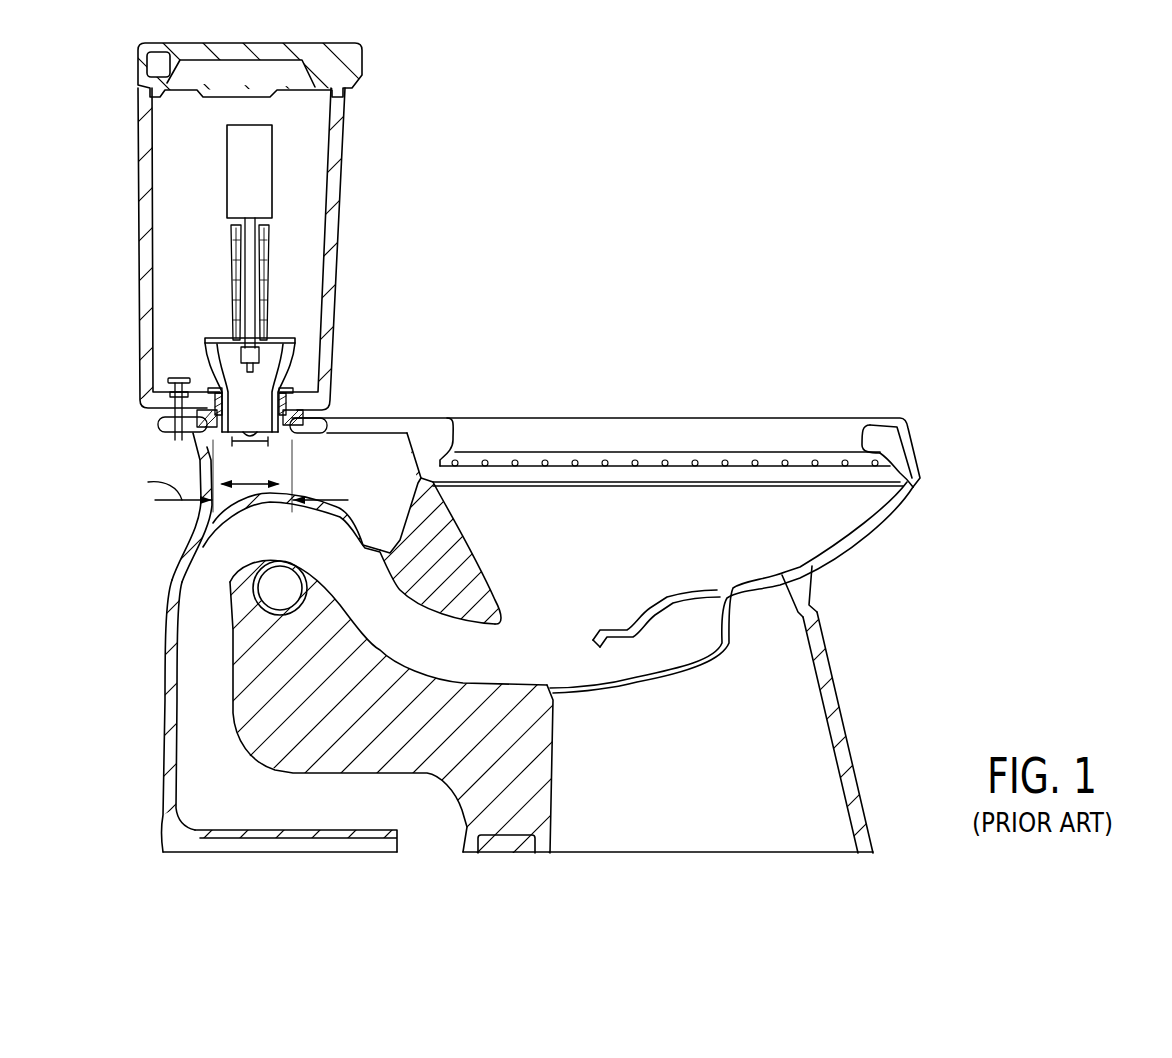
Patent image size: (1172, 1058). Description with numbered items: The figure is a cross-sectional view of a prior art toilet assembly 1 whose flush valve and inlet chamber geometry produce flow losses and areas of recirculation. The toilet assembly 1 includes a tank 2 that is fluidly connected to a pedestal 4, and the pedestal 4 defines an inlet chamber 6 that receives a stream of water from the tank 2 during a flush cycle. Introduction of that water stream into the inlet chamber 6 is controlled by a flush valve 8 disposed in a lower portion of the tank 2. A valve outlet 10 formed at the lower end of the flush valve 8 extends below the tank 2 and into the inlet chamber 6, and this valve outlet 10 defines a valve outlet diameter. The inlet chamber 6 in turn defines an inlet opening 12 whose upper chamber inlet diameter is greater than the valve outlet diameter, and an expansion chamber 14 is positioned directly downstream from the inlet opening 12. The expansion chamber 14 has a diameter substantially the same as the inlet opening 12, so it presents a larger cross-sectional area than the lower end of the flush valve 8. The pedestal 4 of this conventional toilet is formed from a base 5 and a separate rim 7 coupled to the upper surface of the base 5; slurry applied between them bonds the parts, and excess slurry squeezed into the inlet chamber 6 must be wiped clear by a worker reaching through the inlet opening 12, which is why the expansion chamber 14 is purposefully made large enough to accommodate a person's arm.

The toilet assembly 1 is at (538, 192).
The tank 2 is at (341, 243).
The pedestal 4 is at (945, 482).
The base 5 is at (867, 543).
The inlet chamber 6 is at (328, 468).
The rim 7 is at (900, 413).
The flush valve 8 is at (263, 355).
The valve outlet 10 is at (207, 374).
The inlet opening 12 is at (288, 387).
The expansion chamber 14 is at (236, 495).